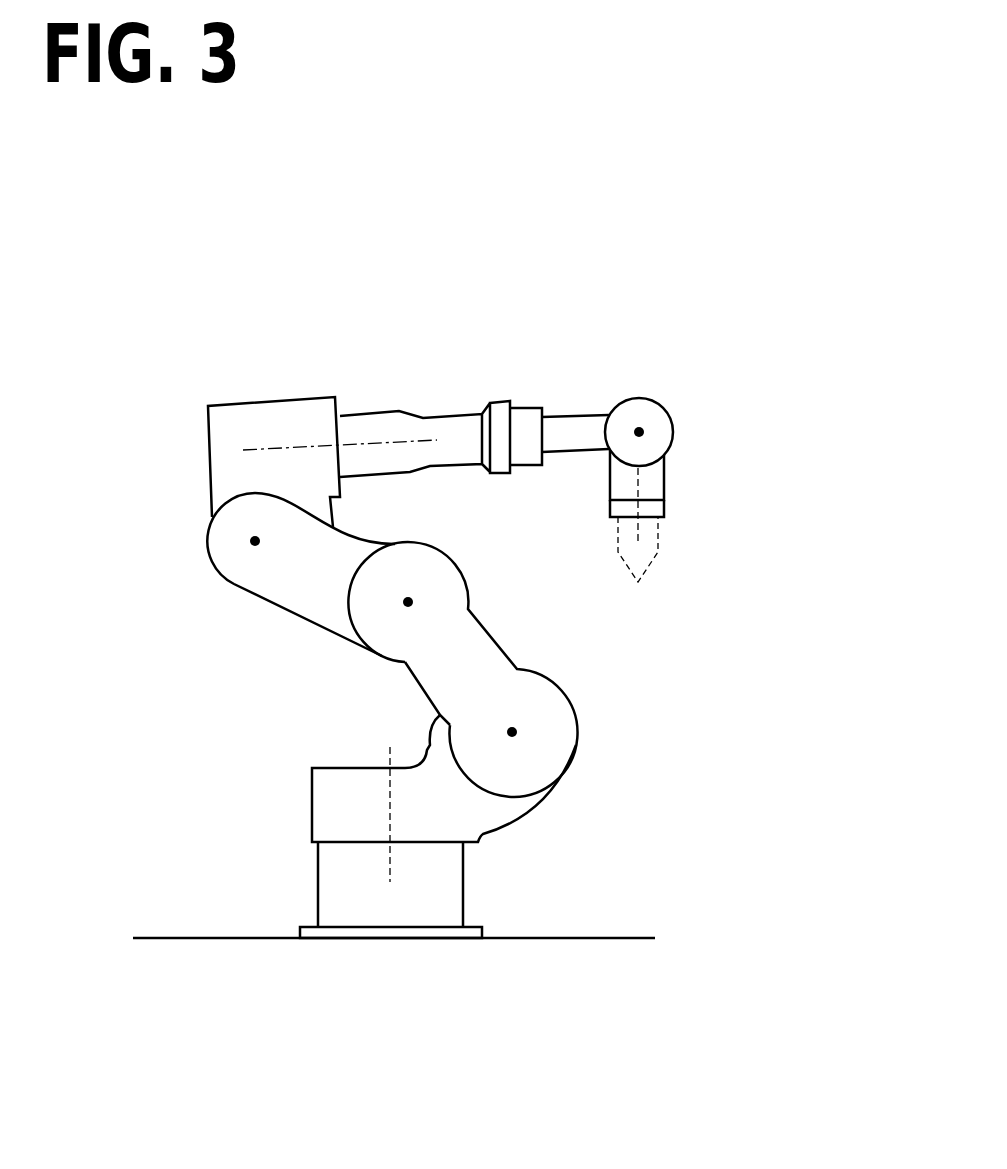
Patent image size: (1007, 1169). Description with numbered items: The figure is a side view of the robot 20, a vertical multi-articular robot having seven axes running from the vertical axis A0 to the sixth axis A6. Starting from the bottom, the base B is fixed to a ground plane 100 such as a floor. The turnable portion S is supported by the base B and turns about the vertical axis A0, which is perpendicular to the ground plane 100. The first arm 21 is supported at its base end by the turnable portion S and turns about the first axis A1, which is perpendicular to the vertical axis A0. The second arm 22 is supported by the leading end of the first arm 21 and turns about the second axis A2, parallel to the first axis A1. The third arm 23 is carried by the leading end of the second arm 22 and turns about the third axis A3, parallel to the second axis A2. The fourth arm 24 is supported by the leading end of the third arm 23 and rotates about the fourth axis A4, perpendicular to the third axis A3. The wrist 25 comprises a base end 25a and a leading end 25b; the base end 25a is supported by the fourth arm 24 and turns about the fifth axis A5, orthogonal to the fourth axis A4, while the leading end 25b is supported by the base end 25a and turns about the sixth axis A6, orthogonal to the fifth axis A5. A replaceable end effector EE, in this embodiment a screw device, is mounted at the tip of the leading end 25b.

The robot 20 is at (551, 350).
The first arm 21 is at (485, 650).
The second arm 22 is at (297, 595).
The third arm 23 is at (273, 410).
The fourth arm 24 is at (443, 425).
The wrist 25 is at (706, 471).
The base end 25a is at (658, 478).
The leading end 25b is at (658, 510).
The vertical axis A0 is at (390, 798).
The first axis A1 is at (520, 733).
The second axis A2 is at (417, 600).
The third axis A3 is at (252, 543).
The fourth axis A4 is at (357, 445).
The fifth axis A5 is at (645, 431).
The sixth axis A6 is at (613, 492).
The turnable portion S is at (502, 810).
The base B is at (448, 892).
The end effector EE is at (645, 559).
The ground plane 100 is at (623, 938).